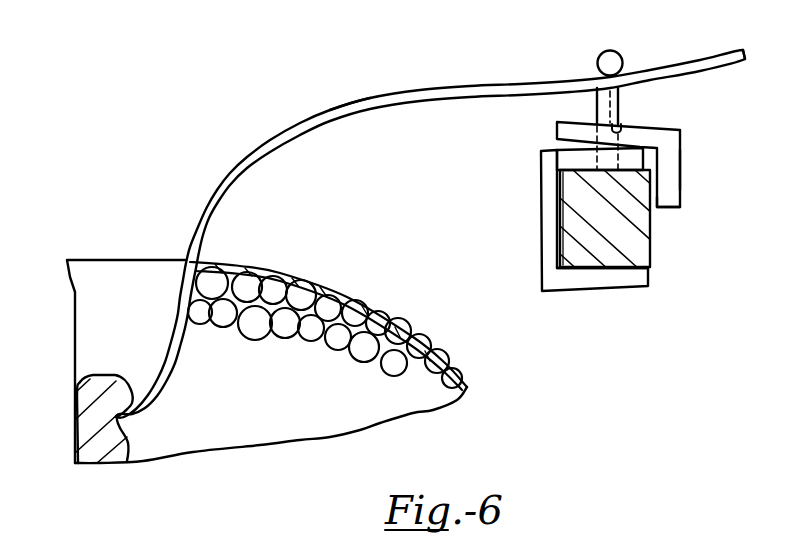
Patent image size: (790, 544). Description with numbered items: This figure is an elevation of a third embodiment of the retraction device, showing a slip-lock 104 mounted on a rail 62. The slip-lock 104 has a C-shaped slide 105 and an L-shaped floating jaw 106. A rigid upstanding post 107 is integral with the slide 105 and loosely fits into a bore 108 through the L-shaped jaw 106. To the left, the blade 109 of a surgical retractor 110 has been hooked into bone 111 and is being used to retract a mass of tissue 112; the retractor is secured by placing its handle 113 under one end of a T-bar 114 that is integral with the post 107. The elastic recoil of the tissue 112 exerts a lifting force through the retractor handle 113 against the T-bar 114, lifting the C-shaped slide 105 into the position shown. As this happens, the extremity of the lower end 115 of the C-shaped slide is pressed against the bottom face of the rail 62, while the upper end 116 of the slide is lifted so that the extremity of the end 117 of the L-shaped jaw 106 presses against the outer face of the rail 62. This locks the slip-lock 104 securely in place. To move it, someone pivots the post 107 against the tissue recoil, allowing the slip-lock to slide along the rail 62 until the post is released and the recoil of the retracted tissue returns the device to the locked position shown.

The rail 62 is at (651, 245).
The slip-lock 104 is at (688, 134).
The C-shaped slide 105 is at (540, 222).
The L-shaped floating jaw 106 is at (672, 167).
The rigid upstanding post 107 is at (596, 106).
The bore 108 is at (624, 112).
The blade 109 is at (322, 115).
The surgical retractor 110 is at (404, 95).
The bone 111 is at (82, 376).
The mass of tissue 112 is at (254, 265).
The handle 113 is at (690, 62).
The T-bar 114 is at (608, 48).
The lower end of the C-shaped slide 115 is at (612, 284).
The upper end of the C-shaped slide 116 is at (570, 160).
The end of the L-shaped jaw 117 is at (670, 203).